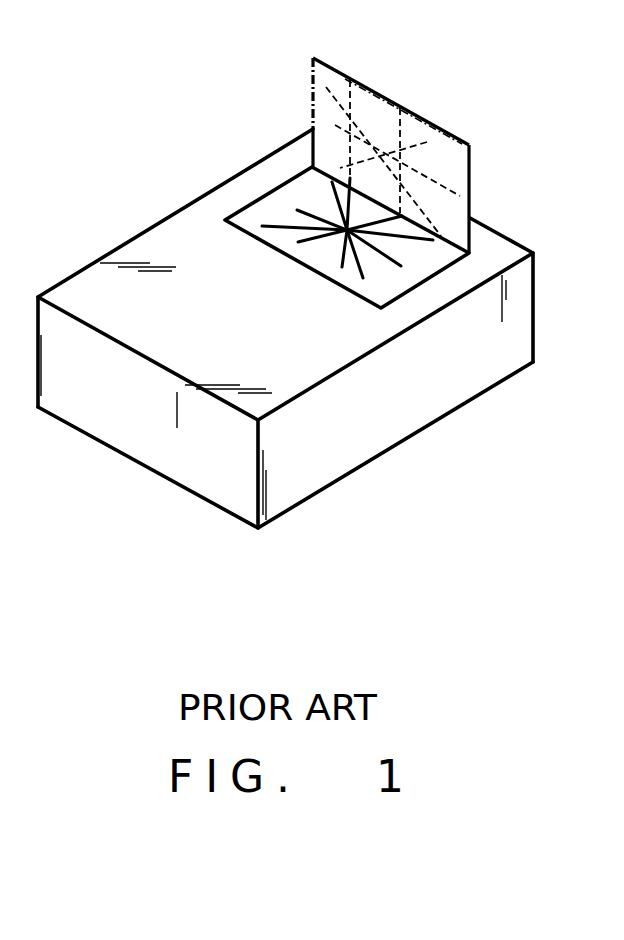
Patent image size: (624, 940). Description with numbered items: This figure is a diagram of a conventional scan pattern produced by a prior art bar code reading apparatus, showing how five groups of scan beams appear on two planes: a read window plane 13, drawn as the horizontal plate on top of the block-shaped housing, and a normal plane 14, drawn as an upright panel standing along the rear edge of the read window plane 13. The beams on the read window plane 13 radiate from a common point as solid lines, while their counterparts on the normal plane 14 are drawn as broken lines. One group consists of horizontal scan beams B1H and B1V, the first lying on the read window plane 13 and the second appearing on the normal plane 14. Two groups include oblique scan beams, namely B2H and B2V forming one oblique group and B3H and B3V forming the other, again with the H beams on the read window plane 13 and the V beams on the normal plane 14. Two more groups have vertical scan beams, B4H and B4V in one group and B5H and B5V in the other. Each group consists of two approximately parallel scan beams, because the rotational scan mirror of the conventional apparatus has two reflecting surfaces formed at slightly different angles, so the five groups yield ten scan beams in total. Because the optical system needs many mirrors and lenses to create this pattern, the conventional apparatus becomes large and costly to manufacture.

The read window plane 13 is at (270, 200).
The normal plane 14 is at (471, 156).
The horizontal scan beam B1H is at (400, 268).
The oblique scan beam B2H is at (258, 227).
The oblique scan beam B3H is at (362, 279).
The vertical scan beam B4H is at (302, 243).
The vertical scan beam B5H is at (340, 263).
The horizontal scan beam B1V is at (434, 170).
The oblique scan beam B2V is at (325, 86).
The oblique scan beam B3V is at (430, 141).
The vertical scan beam B4V is at (403, 110).
The vertical scan beam B5V is at (393, 110).